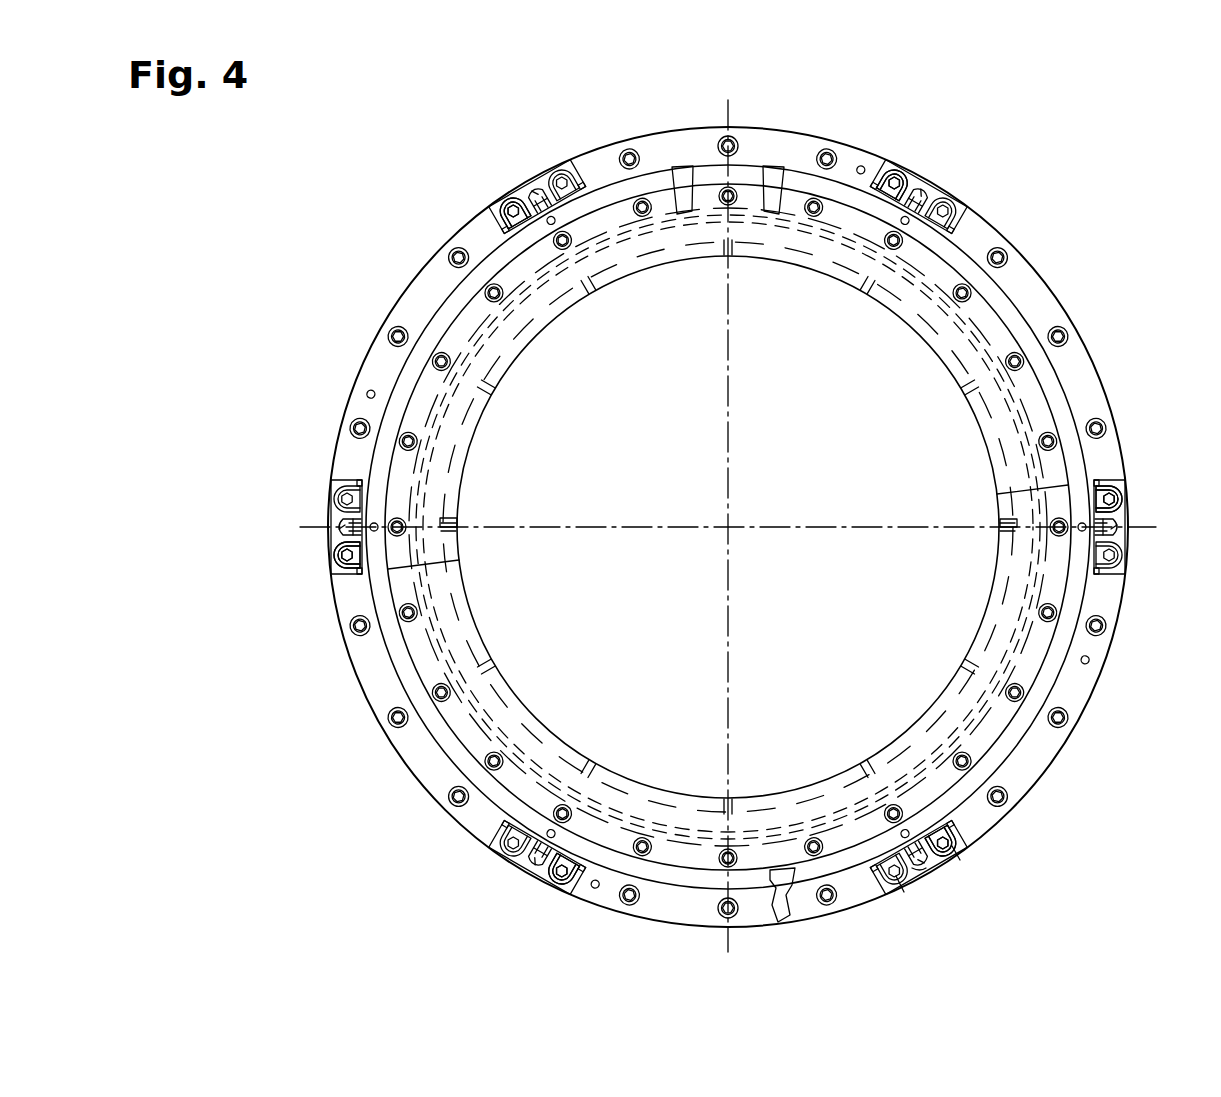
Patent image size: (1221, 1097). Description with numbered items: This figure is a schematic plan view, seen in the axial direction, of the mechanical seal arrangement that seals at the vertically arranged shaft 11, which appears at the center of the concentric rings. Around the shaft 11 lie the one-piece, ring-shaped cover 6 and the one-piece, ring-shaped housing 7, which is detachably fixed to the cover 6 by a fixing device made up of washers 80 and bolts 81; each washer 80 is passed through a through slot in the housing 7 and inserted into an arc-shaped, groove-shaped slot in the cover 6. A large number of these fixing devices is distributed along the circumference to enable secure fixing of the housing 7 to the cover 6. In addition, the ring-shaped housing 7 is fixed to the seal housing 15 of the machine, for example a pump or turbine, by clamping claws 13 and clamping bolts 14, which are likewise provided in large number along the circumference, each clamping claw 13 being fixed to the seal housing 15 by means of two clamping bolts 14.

The cover 6 is at (1055, 585).
The housing 7 is at (1045, 680).
The shaft 11 is at (930, 460).
The clamping claw 13 is at (944, 866).
The clamping bolt 14 is at (952, 855).
The seal housing 15 is at (1030, 765).
The washer 80 is at (552, 186).
The bolt 81 is at (516, 198).